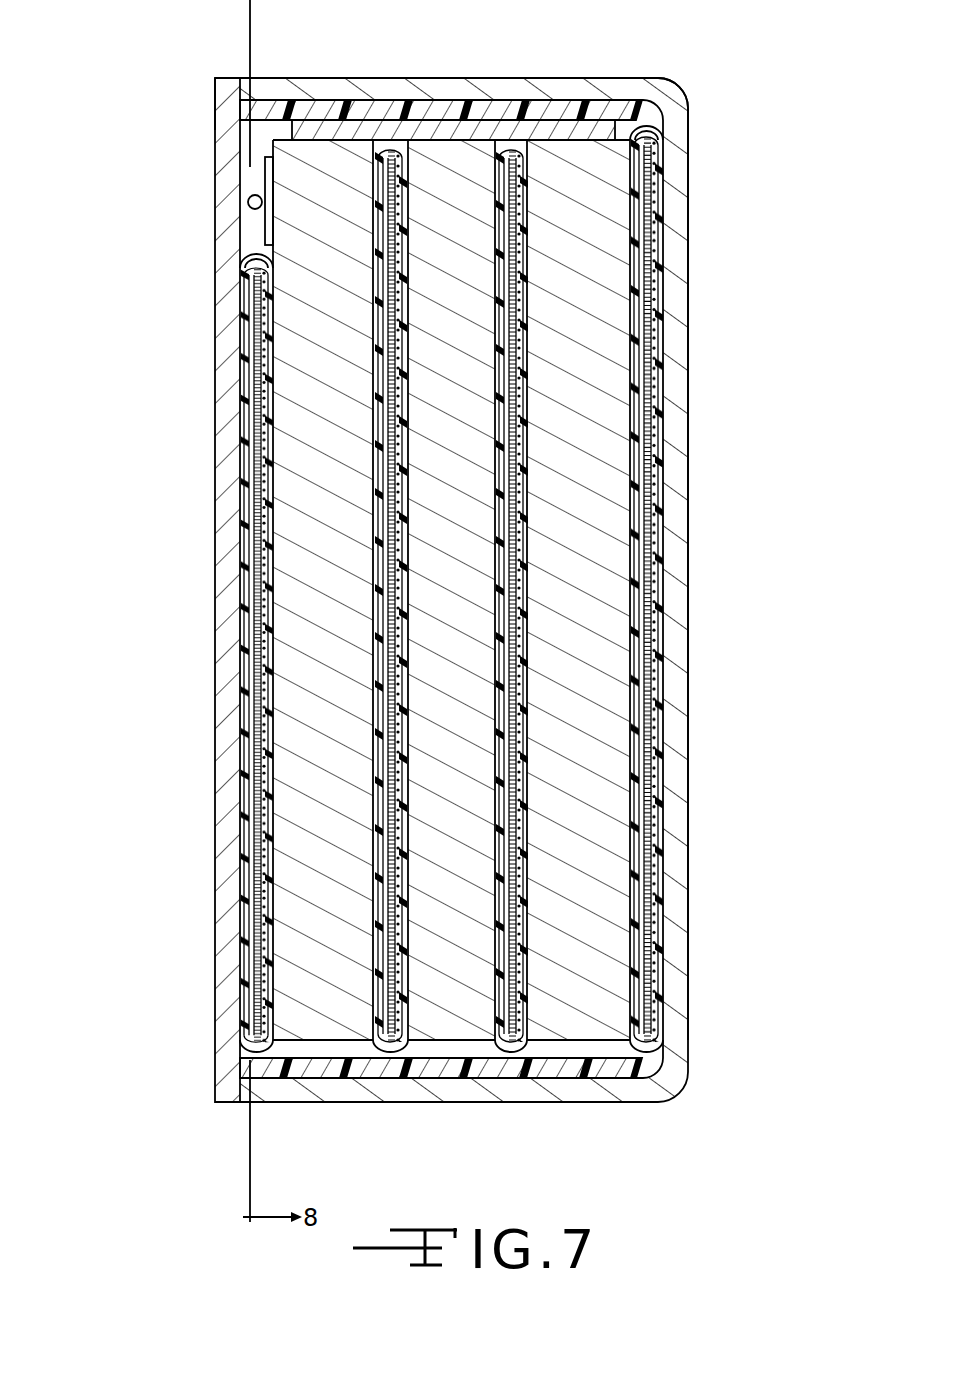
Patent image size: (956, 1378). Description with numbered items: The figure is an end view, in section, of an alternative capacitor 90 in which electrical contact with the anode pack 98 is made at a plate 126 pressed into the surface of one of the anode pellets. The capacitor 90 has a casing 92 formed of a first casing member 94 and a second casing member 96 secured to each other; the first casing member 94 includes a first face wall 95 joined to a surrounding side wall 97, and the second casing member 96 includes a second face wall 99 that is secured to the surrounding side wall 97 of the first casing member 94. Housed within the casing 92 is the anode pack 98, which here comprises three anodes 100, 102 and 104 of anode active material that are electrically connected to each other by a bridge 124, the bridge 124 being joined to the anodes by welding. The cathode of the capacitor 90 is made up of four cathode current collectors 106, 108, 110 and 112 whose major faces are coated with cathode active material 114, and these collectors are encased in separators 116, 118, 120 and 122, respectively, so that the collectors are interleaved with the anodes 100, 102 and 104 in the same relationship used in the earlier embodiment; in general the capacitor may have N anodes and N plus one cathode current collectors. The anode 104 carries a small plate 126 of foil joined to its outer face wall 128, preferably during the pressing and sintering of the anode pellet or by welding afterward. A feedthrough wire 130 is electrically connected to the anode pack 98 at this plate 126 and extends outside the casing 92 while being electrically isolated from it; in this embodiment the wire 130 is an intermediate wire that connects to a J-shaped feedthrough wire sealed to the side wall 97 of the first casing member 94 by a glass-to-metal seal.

The capacitor 90 is at (735, 85).
The casing 92 is at (718, 160).
The first casing member 94 is at (662, 90).
The first face wall 95 is at (678, 387).
The second casing member 96 is at (233, 77).
The surrounding side wall 97 is at (460, 85).
The anode pack 98 is at (253, 142).
The second face wall 99 is at (222, 723).
The anode 100 is at (573, 1028).
The anode 102 is at (453, 1028).
The anode 104 is at (315, 1038).
The cathode current collector 106 is at (653, 1043).
The cathode current collector 108 is at (507, 1042).
The cathode current collector 110 is at (393, 1048).
The cathode current collector 112 is at (250, 1042).
The cathode active material 114 is at (373, 327).
The separator 116 is at (658, 252).
The separator 118 is at (525, 138).
The separator 120 is at (405, 118).
The separator 122 is at (243, 545).
The bridge 124 is at (318, 122).
The plate 126 is at (265, 229).
The outer face wall 128 is at (240, 254).
The feedthrough wire 130 is at (247, 203).